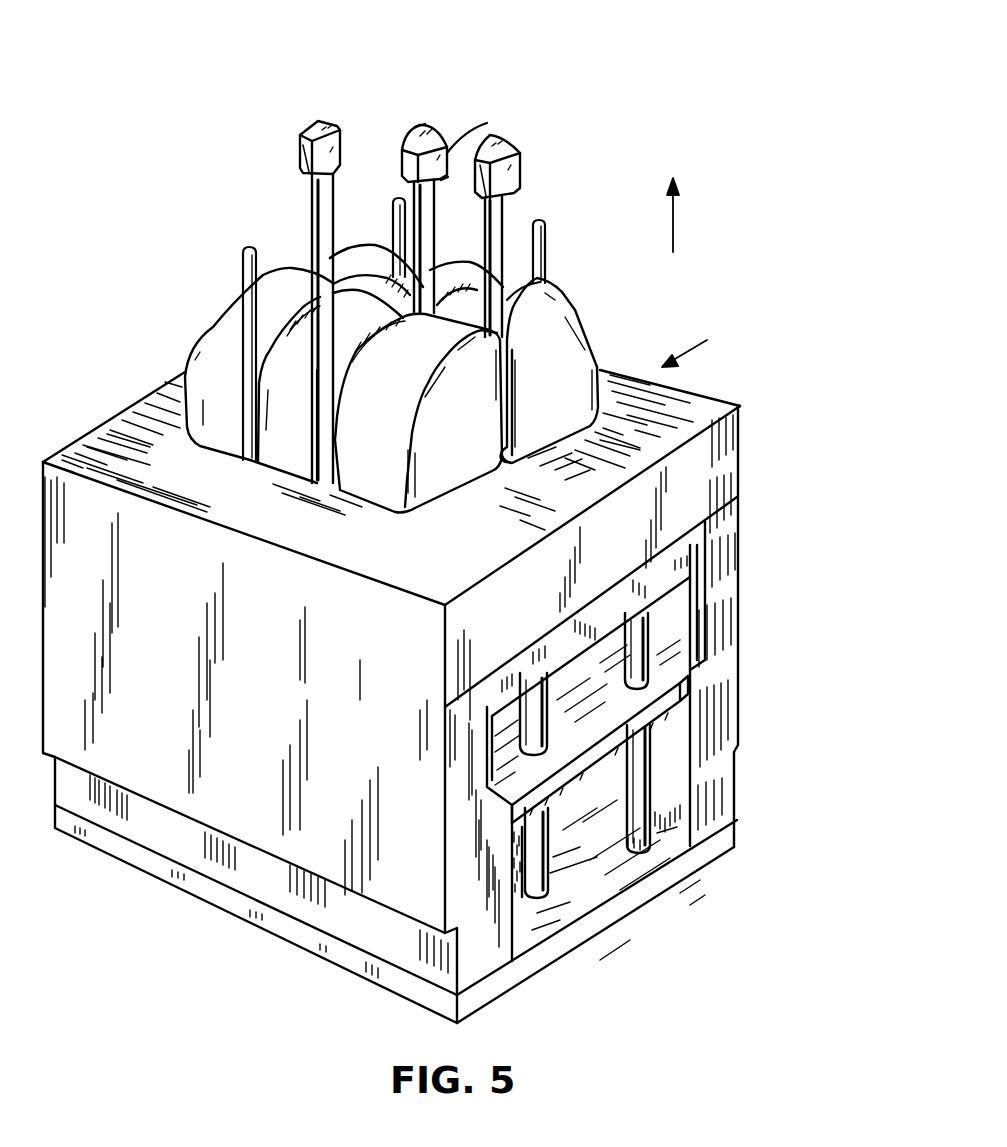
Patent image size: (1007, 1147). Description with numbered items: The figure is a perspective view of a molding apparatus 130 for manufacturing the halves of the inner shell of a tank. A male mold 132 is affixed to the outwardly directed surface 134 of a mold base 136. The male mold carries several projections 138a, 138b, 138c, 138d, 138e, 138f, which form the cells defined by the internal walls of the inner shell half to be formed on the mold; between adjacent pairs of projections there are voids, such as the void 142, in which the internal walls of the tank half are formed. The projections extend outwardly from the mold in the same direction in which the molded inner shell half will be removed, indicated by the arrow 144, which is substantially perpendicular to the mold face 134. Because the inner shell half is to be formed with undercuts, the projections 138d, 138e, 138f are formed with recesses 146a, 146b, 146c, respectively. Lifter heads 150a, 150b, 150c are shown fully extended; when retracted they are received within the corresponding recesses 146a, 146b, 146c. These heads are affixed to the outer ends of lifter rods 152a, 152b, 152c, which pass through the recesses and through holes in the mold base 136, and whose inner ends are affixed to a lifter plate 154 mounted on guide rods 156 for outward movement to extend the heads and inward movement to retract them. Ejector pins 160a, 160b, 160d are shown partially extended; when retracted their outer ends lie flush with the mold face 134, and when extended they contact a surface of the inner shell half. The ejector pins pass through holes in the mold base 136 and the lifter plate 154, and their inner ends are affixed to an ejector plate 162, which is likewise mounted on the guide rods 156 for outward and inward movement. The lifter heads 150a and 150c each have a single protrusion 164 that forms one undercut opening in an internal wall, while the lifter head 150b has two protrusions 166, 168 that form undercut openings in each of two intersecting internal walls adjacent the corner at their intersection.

The molding apparatus 130 is at (710, 340).
The male mold 132 is at (385, 470).
The outwardly directed surface 134 is at (443, 582).
The mold base 136 is at (748, 578).
The projection 138a is at (397, 457).
The projection 138b is at (310, 457).
The projection 138c is at (233, 432).
The projection 138d is at (572, 435).
The projection 138e is at (463, 253).
The projection 138f is at (367, 250).
The void 142 is at (512, 464).
The arrow 144 is at (673, 240).
The recess 146a is at (510, 295).
The recess 146b is at (487, 123).
The recess 146c is at (333, 253).
The lifter head 150a is at (520, 151).
The lifter head 150b is at (432, 122).
The lifter head 150c is at (306, 125).
The lifter rod 152a is at (503, 216).
The lifter rod 152b is at (437, 215).
The lifter rod 152c is at (311, 224).
The lifter plate 154 is at (658, 585).
The guide rods 156 is at (652, 806).
The ejector pin 160a is at (316, 368).
The ejector pin 160b is at (246, 268).
The ejector pin 160d is at (393, 196).
The ejector plate 162 is at (565, 770).
The single protrusion 164 is at (300, 152).
The protrusion 166 is at (422, 124).
The protrusion 168 is at (448, 178).